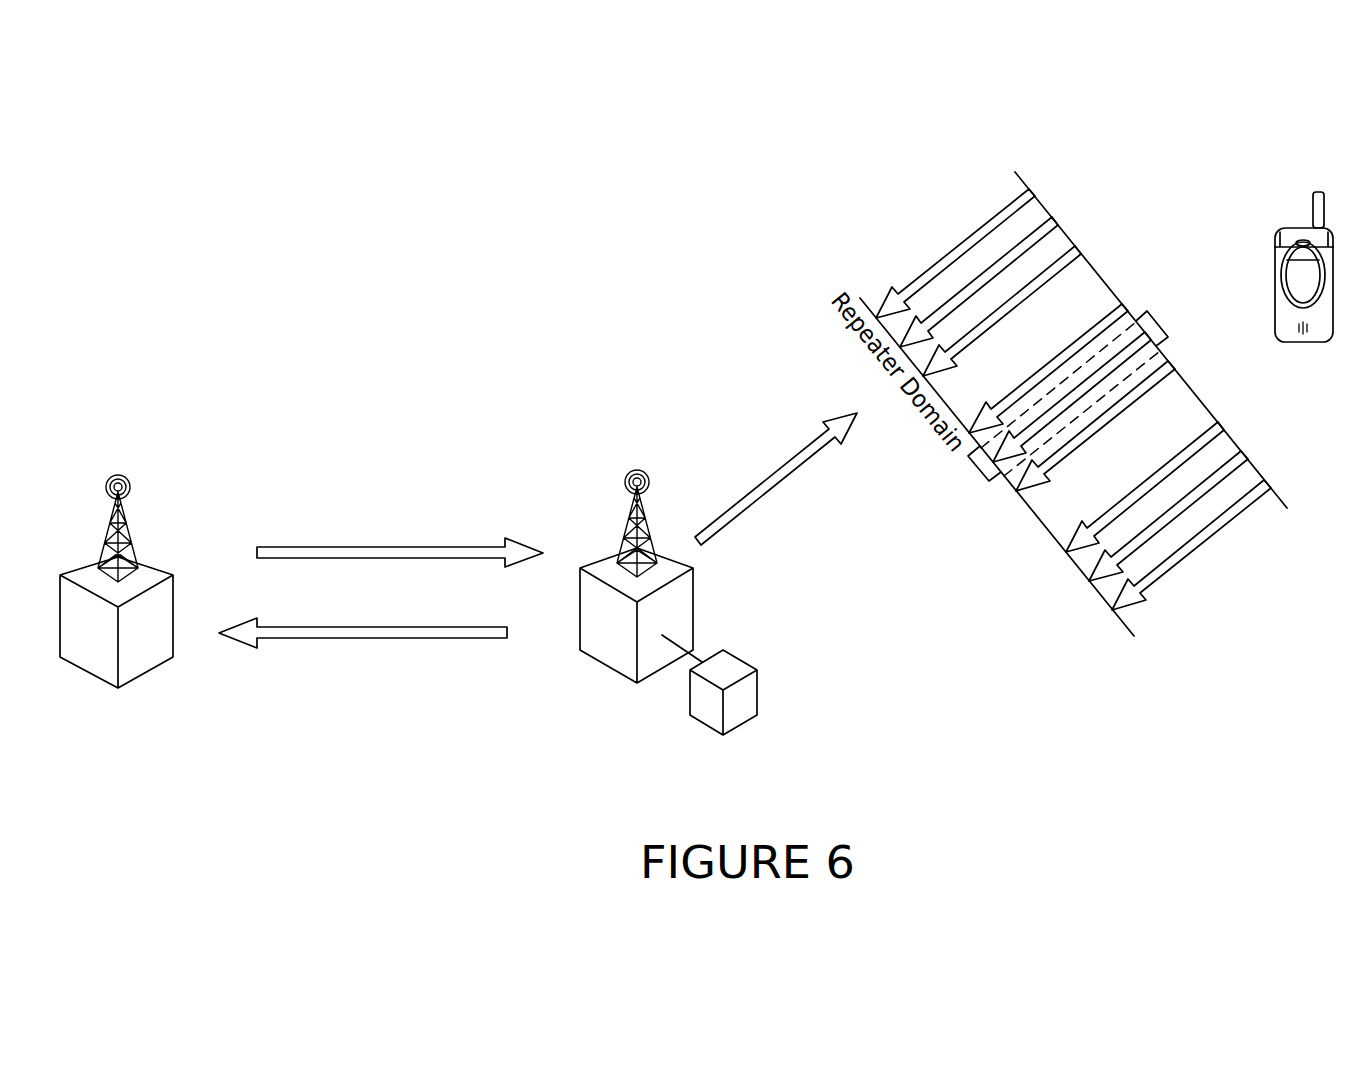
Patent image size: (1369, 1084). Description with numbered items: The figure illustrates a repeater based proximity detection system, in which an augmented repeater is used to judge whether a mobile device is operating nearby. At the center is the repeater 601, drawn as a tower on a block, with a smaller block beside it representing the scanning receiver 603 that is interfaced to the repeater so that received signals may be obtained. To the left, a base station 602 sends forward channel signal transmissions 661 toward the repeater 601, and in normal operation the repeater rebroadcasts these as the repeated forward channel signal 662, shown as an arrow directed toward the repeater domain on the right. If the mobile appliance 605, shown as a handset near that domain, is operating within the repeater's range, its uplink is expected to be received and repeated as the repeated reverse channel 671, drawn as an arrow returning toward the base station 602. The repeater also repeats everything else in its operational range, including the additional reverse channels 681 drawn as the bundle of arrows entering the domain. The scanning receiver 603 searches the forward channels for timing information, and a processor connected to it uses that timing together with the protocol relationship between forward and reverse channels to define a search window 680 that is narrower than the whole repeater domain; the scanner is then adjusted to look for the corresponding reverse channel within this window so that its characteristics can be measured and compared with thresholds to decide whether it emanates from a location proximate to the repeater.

The repeater 601 is at (592, 560).
The base station 602 is at (72, 562).
The scanning receiver 603 is at (759, 690).
The mobile appliance 605 is at (1318, 192).
The forward channel signal transmissions 661 is at (400, 542).
The repeated reverse channel 671 is at (363, 624).
The repeated forward channel signal 662 is at (776, 479).
The search window 680 is at (1150, 311).
The additional reverse channels 681 is at (1053, 213).